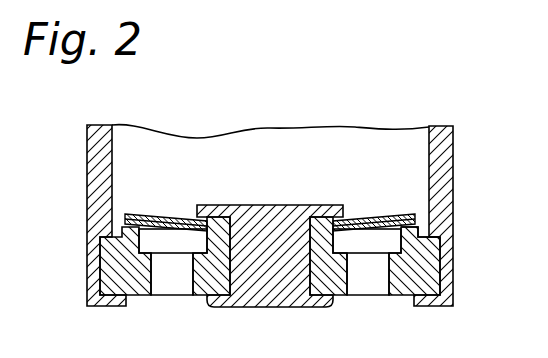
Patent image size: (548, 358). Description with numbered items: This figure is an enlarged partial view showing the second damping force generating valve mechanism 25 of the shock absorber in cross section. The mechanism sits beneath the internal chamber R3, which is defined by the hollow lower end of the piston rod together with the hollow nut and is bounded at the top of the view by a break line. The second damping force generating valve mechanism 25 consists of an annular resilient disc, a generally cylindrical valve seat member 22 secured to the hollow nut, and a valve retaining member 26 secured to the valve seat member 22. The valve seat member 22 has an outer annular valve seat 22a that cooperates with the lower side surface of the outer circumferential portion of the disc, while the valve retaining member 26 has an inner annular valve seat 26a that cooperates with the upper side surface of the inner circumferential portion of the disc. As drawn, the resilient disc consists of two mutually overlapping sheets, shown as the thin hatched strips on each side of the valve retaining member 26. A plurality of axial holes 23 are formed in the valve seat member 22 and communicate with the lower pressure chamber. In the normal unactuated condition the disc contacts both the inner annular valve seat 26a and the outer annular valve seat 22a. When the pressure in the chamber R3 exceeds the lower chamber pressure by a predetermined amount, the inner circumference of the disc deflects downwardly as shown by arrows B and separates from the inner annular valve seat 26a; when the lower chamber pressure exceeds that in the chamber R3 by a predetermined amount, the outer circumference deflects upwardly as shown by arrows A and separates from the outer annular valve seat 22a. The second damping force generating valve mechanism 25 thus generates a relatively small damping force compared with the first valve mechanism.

The valve seat member 22 is at (428, 258).
The outer annular valve seat 22a is at (417, 229).
The axial holes 23 is at (173, 283).
The second damping force generating valve mechanism 25 is at (432, 212).
The valve retaining member 26 is at (268, 287).
The inner annular valve seat 26a is at (331, 212).
The internal chamber R3 is at (271, 141).
The arrows A is at (130, 204).
The arrows B is at (198, 234).